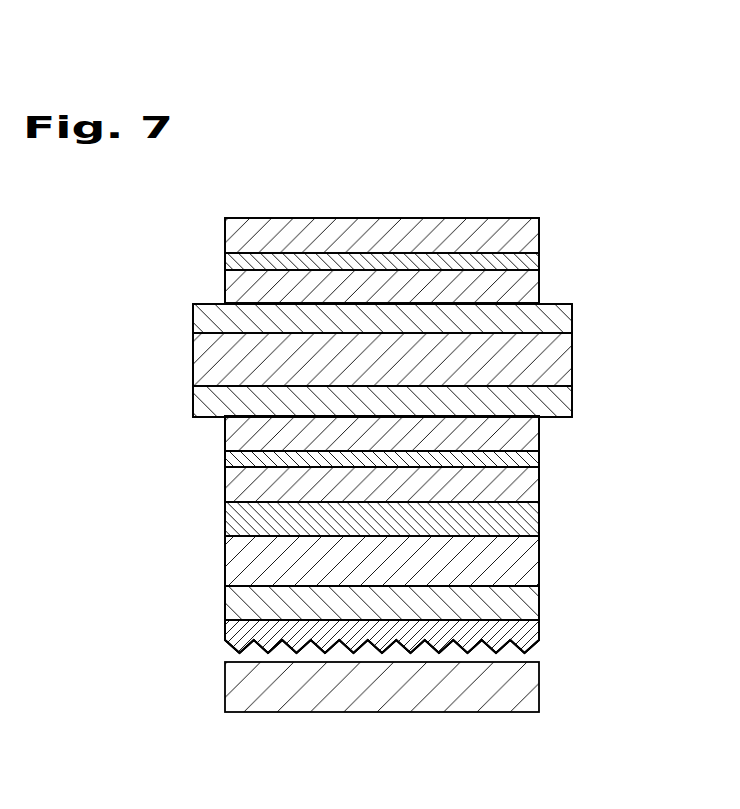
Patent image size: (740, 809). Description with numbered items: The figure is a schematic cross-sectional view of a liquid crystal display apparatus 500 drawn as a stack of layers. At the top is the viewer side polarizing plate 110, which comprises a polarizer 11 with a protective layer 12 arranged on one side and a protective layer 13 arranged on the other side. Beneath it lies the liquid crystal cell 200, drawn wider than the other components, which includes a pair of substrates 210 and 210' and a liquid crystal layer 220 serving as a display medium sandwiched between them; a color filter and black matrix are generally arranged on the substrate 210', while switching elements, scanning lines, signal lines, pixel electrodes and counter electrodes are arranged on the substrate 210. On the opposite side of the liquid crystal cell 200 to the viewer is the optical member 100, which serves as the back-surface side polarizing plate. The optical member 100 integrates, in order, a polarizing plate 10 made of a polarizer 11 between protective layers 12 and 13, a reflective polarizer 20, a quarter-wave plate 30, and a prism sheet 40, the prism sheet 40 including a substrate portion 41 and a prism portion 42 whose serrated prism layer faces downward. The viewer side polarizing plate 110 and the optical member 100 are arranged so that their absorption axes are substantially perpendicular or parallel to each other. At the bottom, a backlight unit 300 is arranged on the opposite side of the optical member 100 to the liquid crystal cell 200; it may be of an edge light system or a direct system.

The liquid crystal display apparatus 500 is at (590, 157).
The viewer side polarizing plate 110 is at (678, 213).
The protective layer 12 is at (542, 232).
The polarizer 11 is at (542, 260).
The protective layer 13 is at (542, 282).
The liquid crystal cell 200 is at (678, 297).
The substrate 210' is at (427, 316).
The liquid crystal layer 220 is at (572, 362).
The substrate 210 is at (425, 400).
The optical member 100 is at (678, 627).
The polarizing plate 10 is at (617, 417).
The reflective polarizer 20 is at (542, 517).
The λ/4 plate 30 is at (542, 563).
The prism sheet 40 is at (617, 585).
The substrate portion 41 is at (542, 602).
The prism portion 42 is at (542, 632).
The backlight unit 300 is at (542, 688).